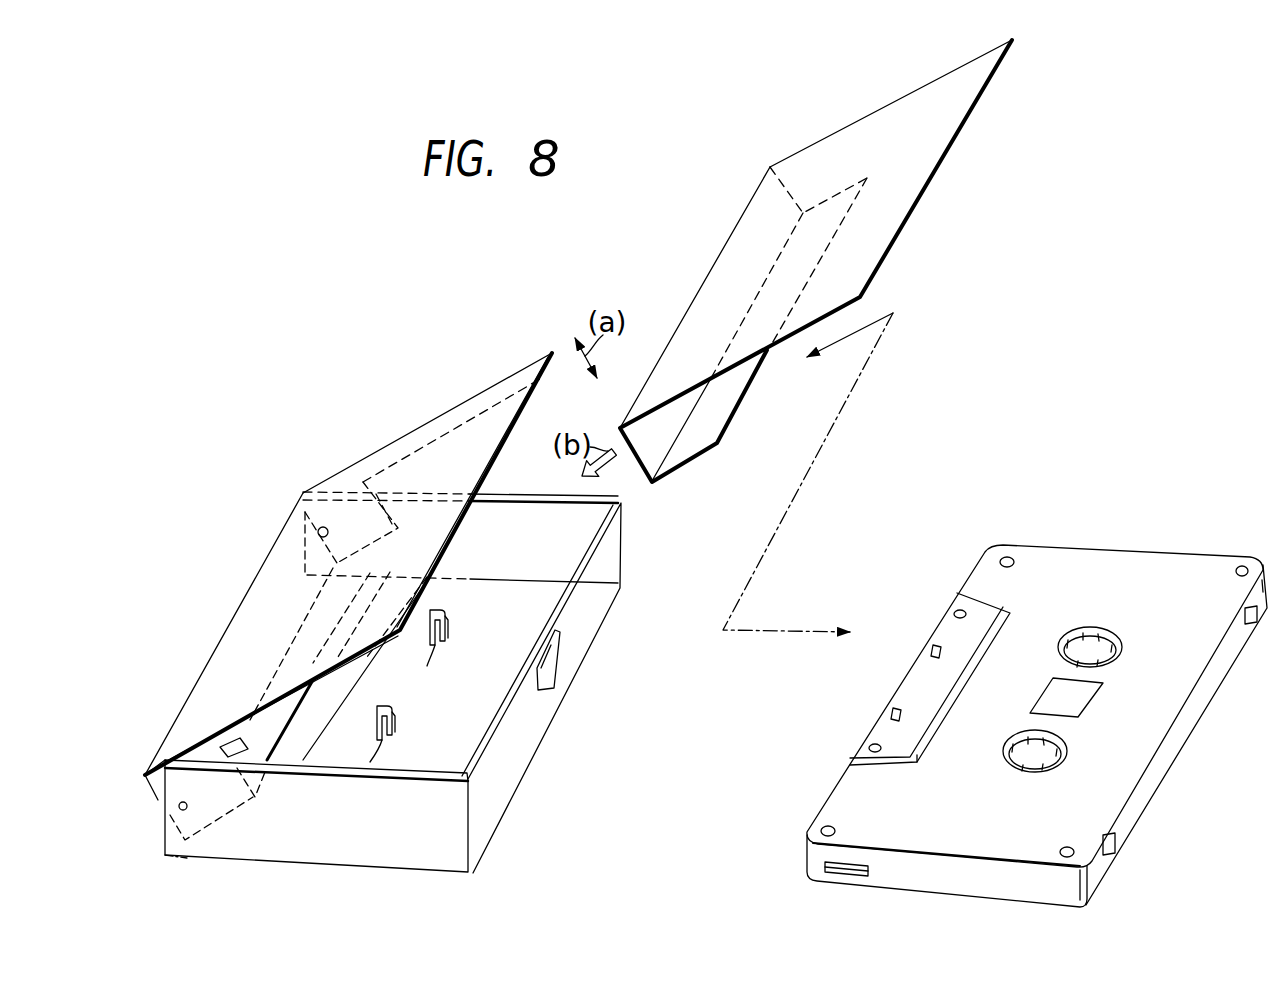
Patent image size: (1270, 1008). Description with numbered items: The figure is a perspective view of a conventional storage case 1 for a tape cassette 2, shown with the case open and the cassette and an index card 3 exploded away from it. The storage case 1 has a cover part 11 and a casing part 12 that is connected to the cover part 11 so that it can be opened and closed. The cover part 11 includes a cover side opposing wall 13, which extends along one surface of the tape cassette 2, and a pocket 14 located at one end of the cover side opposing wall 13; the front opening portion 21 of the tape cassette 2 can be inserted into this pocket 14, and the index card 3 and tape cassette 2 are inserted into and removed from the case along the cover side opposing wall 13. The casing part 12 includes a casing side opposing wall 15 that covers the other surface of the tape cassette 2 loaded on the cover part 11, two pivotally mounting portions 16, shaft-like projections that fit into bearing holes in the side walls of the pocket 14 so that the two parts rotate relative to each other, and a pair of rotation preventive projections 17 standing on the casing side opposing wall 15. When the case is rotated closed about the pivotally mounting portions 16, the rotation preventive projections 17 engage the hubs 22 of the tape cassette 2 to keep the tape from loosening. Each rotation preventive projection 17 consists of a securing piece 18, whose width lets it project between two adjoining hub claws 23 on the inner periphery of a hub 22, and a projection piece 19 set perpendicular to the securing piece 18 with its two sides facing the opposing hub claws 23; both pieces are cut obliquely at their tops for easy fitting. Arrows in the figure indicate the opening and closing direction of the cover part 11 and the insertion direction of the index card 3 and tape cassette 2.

The storage case 1 is at (390, 602).
The tape cassette 2 is at (1033, 679).
The index card 3 is at (823, 150).
The cover part 11 is at (472, 400).
The casing part 12 is at (560, 712).
The cover side opposing wall 13 is at (428, 512).
The pocket 14 is at (248, 750).
The casing side opposing wall 15 is at (535, 615).
The pivotally mounting portions 16 is at (322, 528).
The rotation preventive projections 17 is at (450, 618).
The securing piece 18 is at (447, 632).
The projection piece 19 is at (429, 645).
The front opening portion 21 is at (892, 690).
The hubs 22 is at (1100, 655).
The hub claws 23 is at (1096, 652).